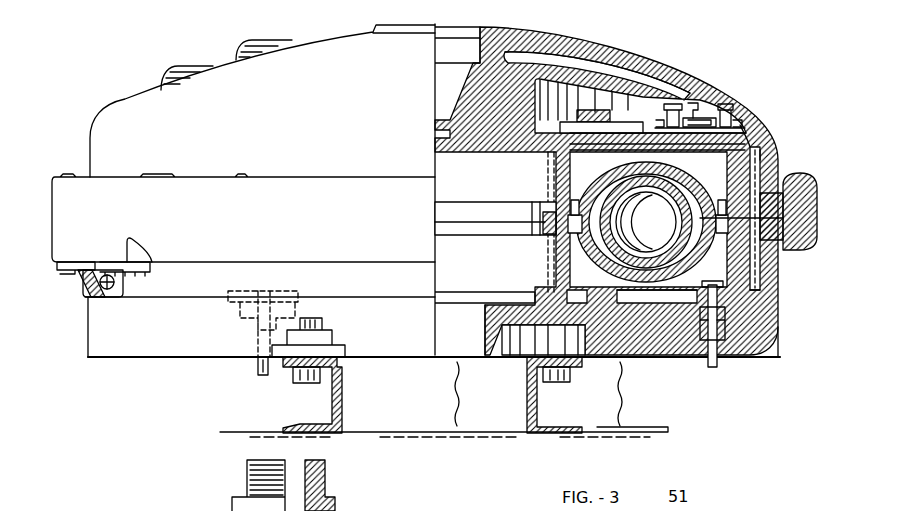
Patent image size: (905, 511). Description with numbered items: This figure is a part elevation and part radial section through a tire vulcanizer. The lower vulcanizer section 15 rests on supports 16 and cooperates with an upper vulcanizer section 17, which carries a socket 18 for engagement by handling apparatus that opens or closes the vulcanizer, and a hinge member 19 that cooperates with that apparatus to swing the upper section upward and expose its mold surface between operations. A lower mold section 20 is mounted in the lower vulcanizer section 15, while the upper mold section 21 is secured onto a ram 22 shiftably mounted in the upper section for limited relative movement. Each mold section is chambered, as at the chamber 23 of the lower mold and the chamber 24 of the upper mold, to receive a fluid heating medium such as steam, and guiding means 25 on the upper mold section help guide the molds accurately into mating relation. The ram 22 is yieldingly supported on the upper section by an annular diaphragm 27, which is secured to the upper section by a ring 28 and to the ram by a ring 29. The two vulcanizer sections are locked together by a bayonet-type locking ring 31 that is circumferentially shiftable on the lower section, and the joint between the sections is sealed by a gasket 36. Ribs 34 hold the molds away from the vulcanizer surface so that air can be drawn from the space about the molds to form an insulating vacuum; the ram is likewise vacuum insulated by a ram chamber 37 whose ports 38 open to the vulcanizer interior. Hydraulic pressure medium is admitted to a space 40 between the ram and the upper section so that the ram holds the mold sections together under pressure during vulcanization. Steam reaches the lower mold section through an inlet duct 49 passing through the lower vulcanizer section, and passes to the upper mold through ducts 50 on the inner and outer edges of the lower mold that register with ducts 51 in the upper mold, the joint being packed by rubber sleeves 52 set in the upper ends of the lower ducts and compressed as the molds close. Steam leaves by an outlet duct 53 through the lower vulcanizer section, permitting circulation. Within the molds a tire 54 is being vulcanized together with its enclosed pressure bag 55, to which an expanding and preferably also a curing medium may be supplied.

The lower vulcanizer section 15 is at (778, 321).
The supports 16 is at (342, 413).
The upper vulcanizer section 17 is at (722, 120).
The socket 18 is at (480, 50).
The hinge member 19 is at (277, 40).
The lower mold section 20 is at (733, 287).
The upper mold section 21 is at (737, 140).
The ram 22 is at (630, 120).
The chamber of lower mold section 23 is at (703, 262).
The chamber of upper mold section 24 is at (742, 152).
The guiding means 25 is at (780, 168).
The annular diaphragm 27 is at (695, 118).
The ring 28 is at (676, 110).
The ring 29 is at (723, 133).
The locking ring 31 is at (807, 247).
The ribs 34 is at (757, 267).
The gasket 36 is at (793, 213).
The ram chamber 37 is at (583, 93).
The ports 38 is at (598, 113).
The space 40 is at (572, 60).
The inlet duct 49 is at (707, 355).
The ducts 50 is at (575, 240).
The ducts 51 is at (573, 197).
The rubber sleeves 52 is at (553, 240).
The outlet duct 53 is at (258, 365).
The tire 54 is at (636, 268).
The pressure bag 55 is at (655, 252).